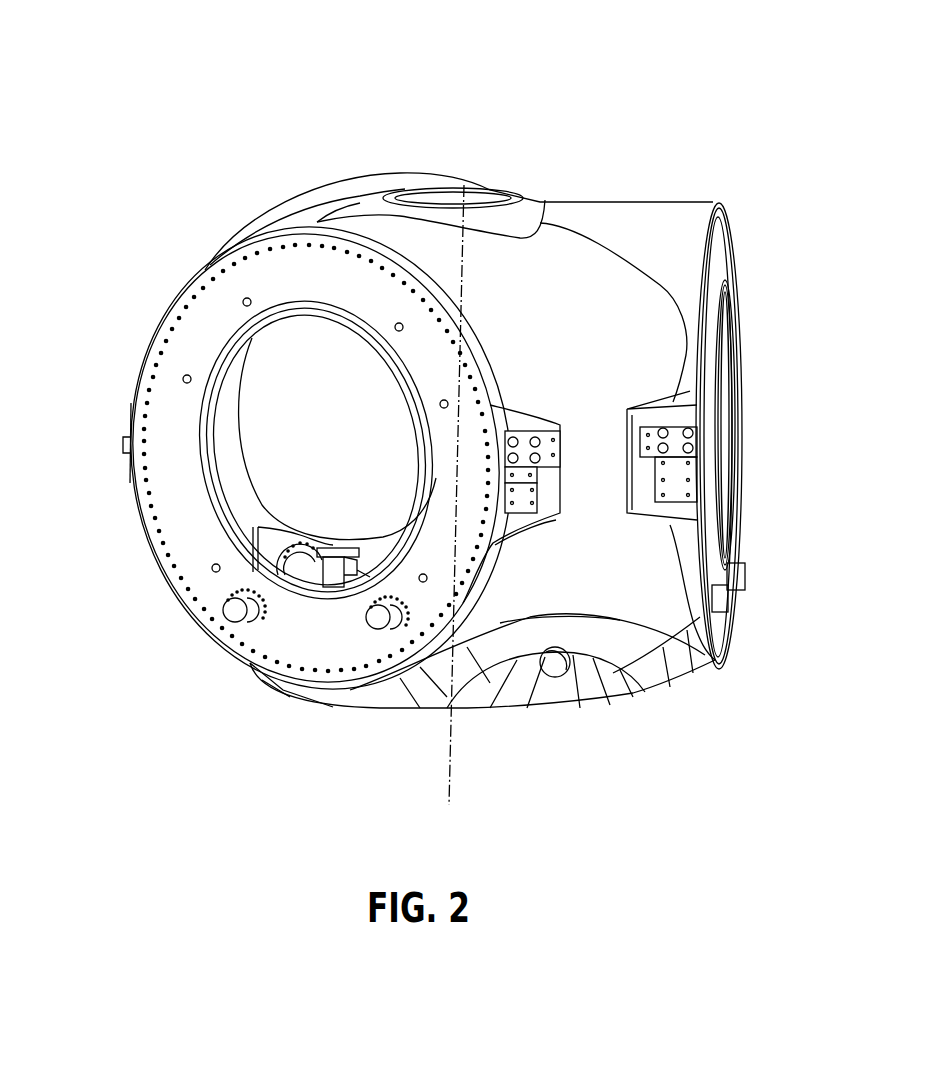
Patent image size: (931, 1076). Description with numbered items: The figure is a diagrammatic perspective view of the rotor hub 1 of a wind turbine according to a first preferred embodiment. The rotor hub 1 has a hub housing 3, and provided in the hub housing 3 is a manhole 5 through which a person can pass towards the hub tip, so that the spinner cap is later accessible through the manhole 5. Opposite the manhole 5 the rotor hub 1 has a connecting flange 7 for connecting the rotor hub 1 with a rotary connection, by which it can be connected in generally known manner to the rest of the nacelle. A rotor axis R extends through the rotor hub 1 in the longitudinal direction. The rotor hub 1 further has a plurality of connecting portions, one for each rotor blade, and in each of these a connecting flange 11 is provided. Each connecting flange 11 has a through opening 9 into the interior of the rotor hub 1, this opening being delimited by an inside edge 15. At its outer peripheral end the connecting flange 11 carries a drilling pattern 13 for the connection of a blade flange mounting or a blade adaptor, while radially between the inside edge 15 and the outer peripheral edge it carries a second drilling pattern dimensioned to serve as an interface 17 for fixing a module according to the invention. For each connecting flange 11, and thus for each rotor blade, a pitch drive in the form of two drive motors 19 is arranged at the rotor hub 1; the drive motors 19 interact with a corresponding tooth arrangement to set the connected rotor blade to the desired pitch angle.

The rotor hub 1 is at (208, 103).
The hub housing 3 is at (551, 247).
The manhole 5 is at (469, 203).
The connecting flange 7 is at (470, 713).
The through opening 9 is at (202, 235).
The connecting flange 11 is at (190, 345).
The drilling pattern 13 is at (140, 487).
The inside edge 15 is at (197, 432).
The interface 17 is at (243, 302).
The drive motors 19 is at (340, 547).